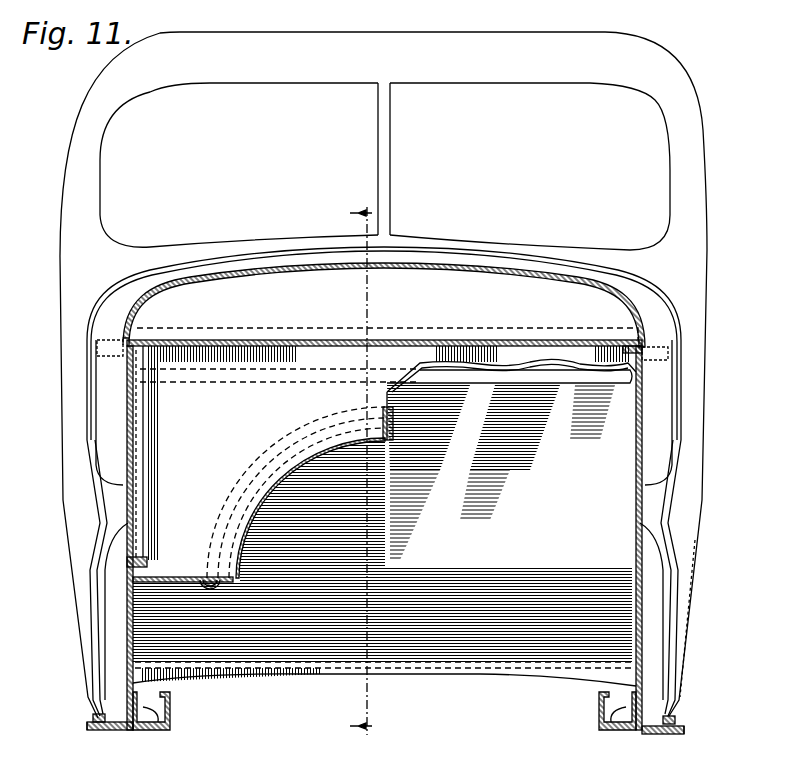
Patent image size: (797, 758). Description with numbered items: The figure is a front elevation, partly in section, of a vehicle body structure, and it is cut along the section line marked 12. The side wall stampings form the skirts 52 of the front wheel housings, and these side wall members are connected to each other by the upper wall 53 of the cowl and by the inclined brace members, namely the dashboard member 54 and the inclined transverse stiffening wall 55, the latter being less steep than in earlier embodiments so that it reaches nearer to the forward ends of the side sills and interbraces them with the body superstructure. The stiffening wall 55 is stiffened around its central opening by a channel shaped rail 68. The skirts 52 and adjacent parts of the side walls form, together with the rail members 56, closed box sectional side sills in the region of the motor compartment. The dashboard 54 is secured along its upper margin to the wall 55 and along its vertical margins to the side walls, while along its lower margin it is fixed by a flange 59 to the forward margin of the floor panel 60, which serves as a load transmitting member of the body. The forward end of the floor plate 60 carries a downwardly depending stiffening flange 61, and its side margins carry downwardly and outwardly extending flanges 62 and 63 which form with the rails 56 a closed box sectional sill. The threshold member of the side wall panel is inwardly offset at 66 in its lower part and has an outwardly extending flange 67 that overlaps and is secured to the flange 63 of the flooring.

The section line 12 is at (350, 470).
The skirt 52 is at (127, 592).
The upper wall of the cowl 53 is at (432, 261).
The dashboard member 54 is at (605, 466).
The inclined transverse stiffening wall 55 is at (222, 393).
The rail member 56 is at (170, 716).
The flange 59 is at (306, 656).
The floor panel 60 is at (463, 663).
The stiffening flange 61 is at (403, 676).
The flange 62 is at (143, 707).
The flange 63 is at (92, 731).
The inward offset 66 is at (100, 710).
The outwardly extending flange 67 is at (88, 719).
The channel shaped rail 68 is at (205, 578).